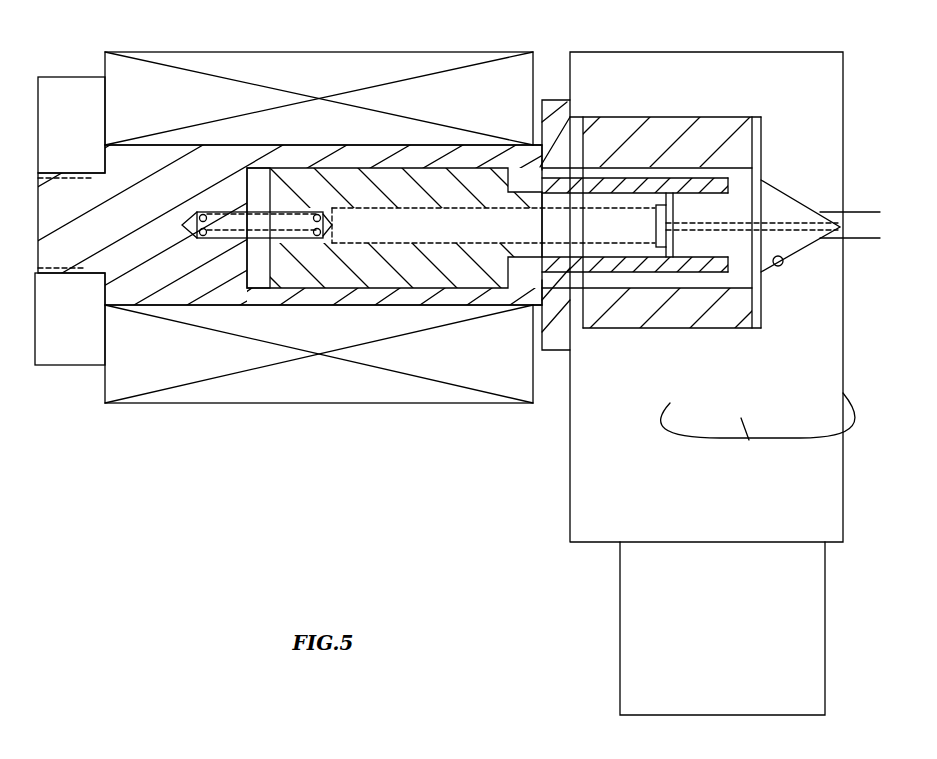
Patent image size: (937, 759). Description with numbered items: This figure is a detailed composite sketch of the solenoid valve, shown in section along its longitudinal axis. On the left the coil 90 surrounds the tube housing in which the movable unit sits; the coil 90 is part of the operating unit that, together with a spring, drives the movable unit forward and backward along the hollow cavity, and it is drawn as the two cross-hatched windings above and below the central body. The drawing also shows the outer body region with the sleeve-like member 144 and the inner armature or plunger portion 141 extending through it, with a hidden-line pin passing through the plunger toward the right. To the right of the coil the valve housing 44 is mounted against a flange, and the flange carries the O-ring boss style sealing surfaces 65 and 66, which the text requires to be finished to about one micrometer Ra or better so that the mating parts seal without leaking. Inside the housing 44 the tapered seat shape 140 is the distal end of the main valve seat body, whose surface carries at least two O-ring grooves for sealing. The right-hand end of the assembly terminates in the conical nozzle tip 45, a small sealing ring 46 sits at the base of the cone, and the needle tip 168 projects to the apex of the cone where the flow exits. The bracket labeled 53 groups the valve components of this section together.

The sleeve 144 is at (73, 170).
The sealing surface 65 is at (578, 104).
The nozzle housing 44 is at (709, 166).
The nozzle tip 45 is at (773, 180).
The needle tip 168 is at (841, 233).
The seal ring 46 is at (783, 268).
The tapered seat shape 140 is at (708, 244).
The plunger 141 is at (683, 266).
The sealing surface 66 is at (577, 338).
The valve assembly 53 is at (758, 429).
The coil 90 is at (314, 400).